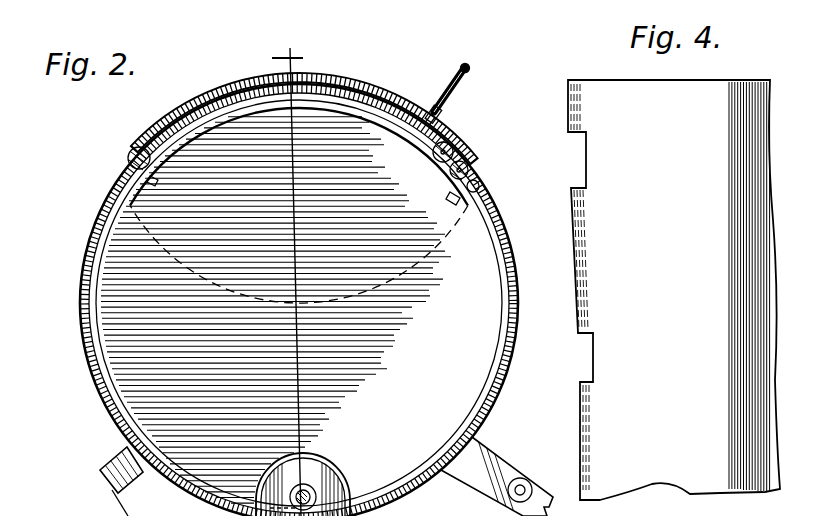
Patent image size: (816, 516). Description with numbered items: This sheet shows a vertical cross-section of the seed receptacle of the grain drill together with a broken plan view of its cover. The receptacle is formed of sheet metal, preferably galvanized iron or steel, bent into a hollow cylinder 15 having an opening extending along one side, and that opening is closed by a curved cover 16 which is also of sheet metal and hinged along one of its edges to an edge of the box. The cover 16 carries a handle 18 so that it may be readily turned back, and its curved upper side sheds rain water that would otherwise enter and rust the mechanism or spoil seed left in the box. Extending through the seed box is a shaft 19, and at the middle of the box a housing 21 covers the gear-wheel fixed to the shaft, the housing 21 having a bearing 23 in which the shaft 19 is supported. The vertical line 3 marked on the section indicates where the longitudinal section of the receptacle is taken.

In FIG. 2, the section line 3— 3 is at (287, 271).
In FIG. 2, the hollow cylinder box 15 is at (104, 232).
In FIG. 2, the curved cover 16 is at (343, 82).
In FIG. 4, the curved cover 16 is at (605, 91).
In FIG. 2, the handle 18 is at (458, 83).
In FIG. 2, the shaft 19 is at (305, 490).
In FIG. 2, the housing 21 is at (278, 470).
In FIG. 2, the bearing 23 is at (304, 492).